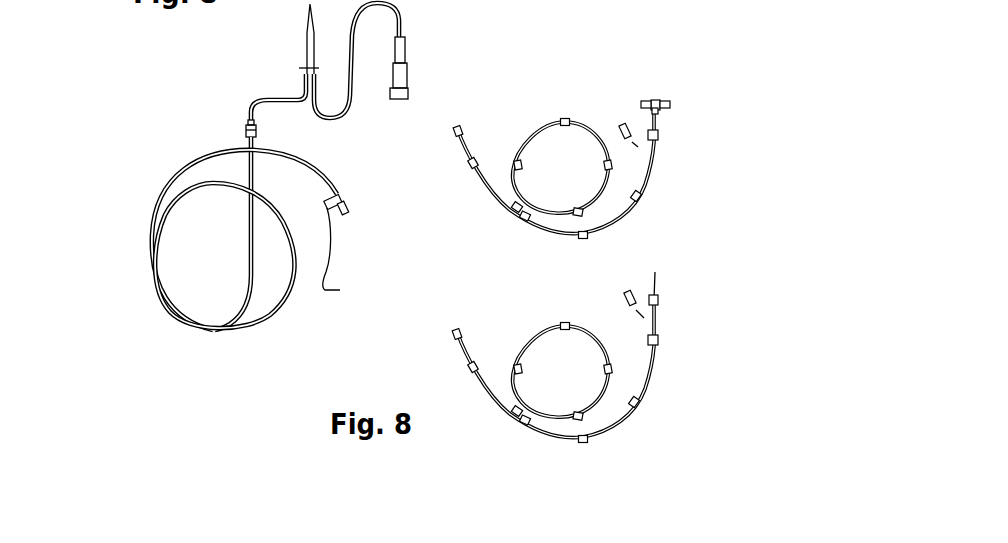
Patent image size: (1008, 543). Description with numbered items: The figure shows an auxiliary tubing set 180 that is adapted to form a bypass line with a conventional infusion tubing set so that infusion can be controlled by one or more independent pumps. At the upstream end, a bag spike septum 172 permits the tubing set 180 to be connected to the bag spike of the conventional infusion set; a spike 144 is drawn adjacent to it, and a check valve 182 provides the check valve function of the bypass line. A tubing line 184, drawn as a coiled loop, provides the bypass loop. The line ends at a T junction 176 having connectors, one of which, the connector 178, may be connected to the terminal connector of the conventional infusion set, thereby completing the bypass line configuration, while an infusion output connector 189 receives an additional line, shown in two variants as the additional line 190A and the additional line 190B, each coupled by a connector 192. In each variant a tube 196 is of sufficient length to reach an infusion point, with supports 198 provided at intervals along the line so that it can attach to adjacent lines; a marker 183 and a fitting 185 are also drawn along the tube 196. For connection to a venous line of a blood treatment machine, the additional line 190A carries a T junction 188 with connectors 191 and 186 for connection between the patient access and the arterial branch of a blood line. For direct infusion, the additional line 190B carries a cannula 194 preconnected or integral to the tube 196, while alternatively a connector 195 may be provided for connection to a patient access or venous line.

The needle 144 is at (305, 55).
The bag spike septum 172 is at (407, 80).
The T junction 176 is at (343, 195).
The connector 178 is at (353, 257).
The auxiliary tubing set 180 is at (160, 147).
The check valve 182 is at (246, 131).
The tubing line 184 is at (174, 197).
The infusion output connector 189 is at (347, 212).
The marker band 183 is at (640, 198).
The connector 185 is at (660, 137).
The connector 186 is at (671, 105).
The T junction 188 is at (658, 99).
The additional line 190A is at (688, 178).
The additional line 190B is at (668, 437).
The connector 191 is at (640, 100).
The connector 192 is at (460, 127).
The cannula 194 is at (658, 292).
The connector 195 is at (620, 122).
The tube 196 is at (652, 357).
The supports 198 is at (515, 210).